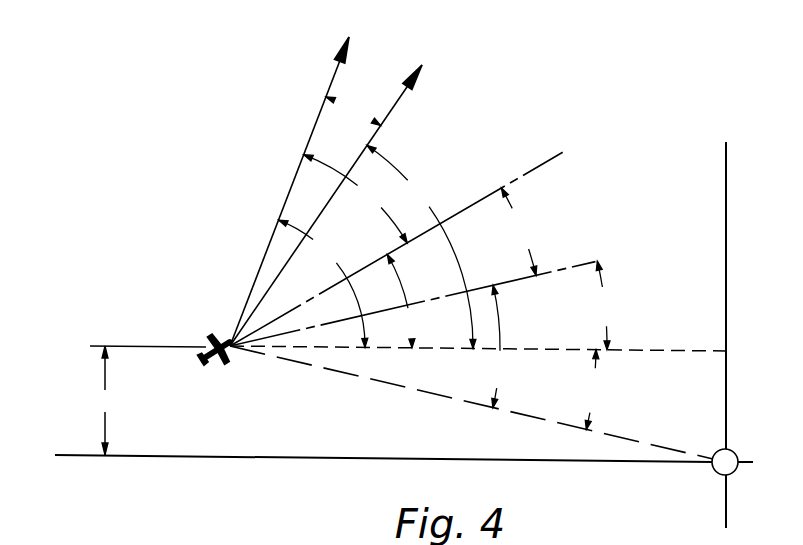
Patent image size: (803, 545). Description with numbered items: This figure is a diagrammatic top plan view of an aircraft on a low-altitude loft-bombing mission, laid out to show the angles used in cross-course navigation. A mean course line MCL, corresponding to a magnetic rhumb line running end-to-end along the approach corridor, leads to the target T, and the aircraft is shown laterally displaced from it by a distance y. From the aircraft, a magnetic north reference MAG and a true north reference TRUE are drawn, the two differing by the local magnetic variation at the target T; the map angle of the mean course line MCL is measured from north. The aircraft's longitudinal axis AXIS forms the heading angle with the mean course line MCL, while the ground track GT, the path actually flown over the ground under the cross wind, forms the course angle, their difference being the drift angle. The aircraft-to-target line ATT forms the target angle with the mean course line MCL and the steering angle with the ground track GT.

The target T is at (725, 335).
The lateral displacement y is at (105, 400).
The mean course line MCL is at (305, 458).
The magnetic north reference MAG is at (304, 177).
The true north reference TRUE is at (344, 190).
The longitudinal axis of the aircraft AXIS is at (563, 152).
The ground track GT is at (586, 261).
The aircraft-to-target line ATT is at (440, 397).